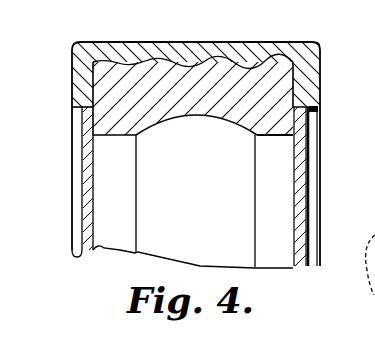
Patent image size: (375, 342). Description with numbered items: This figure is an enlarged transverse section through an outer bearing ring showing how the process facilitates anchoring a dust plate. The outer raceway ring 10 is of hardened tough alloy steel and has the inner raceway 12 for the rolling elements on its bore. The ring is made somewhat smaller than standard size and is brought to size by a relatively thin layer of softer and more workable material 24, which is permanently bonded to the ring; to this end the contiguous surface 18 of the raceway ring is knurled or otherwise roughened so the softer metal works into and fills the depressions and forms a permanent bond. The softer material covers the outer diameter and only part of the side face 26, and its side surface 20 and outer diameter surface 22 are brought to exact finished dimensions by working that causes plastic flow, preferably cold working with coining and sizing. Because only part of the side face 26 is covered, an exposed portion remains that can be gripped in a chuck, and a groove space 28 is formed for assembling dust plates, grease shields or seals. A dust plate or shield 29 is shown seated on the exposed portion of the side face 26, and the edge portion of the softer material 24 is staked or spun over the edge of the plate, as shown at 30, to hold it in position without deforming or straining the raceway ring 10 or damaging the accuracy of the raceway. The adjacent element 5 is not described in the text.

The adjacent component (partial) 5 is at (370, 251).
The outer raceway ring 10 is at (277, 85).
The inner raceway 12 is at (185, 118).
The contiguous surface 18 is at (272, 62).
The side surface 20 is at (72, 69).
The outer diameter surface 22 is at (160, 33).
The softer and more workable material 24 is at (212, 48).
The side face 26 is at (88, 127).
The groove space 28 is at (77, 115).
The dust plate or shield 29 is at (87, 170).
The staked or spun-over edge portion 30 is at (318, 107).